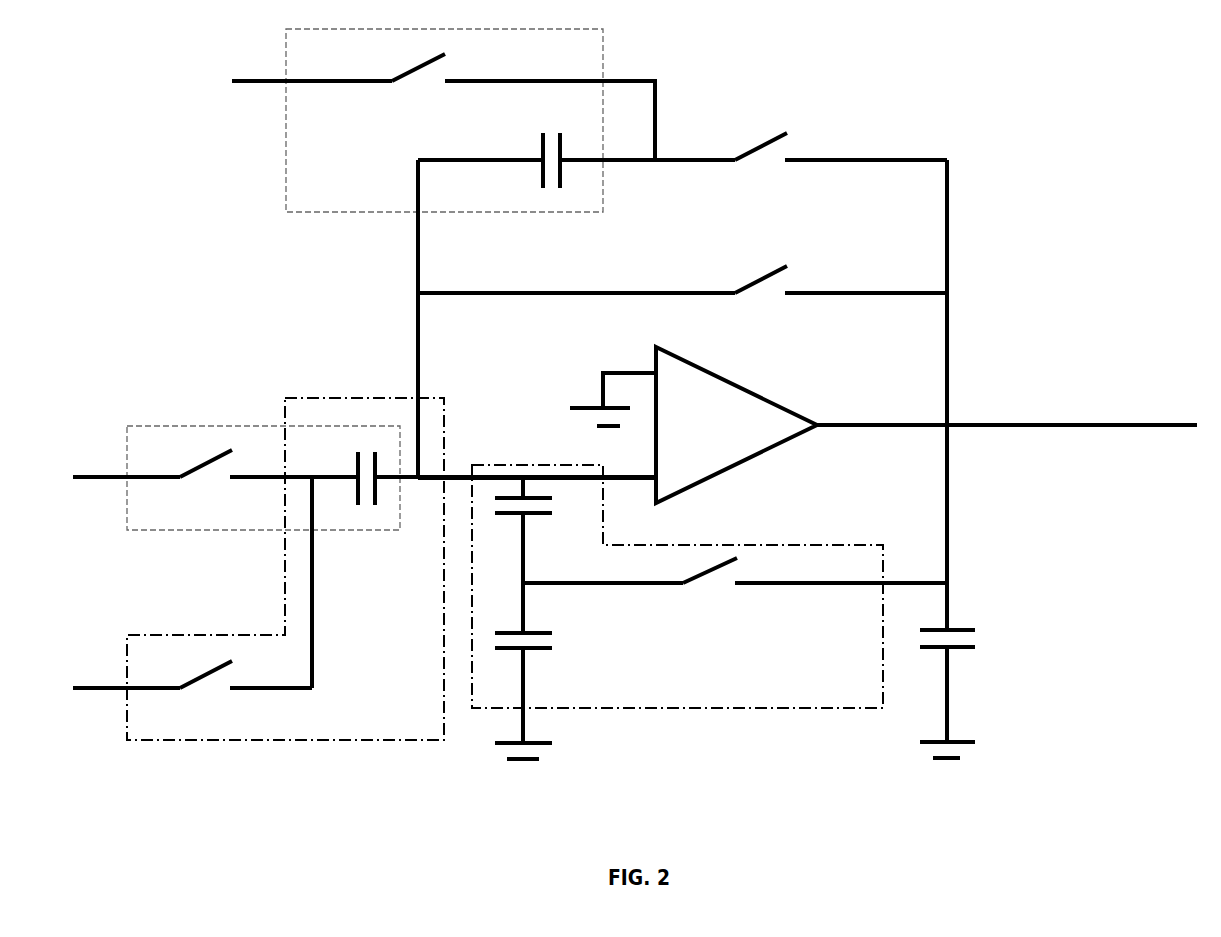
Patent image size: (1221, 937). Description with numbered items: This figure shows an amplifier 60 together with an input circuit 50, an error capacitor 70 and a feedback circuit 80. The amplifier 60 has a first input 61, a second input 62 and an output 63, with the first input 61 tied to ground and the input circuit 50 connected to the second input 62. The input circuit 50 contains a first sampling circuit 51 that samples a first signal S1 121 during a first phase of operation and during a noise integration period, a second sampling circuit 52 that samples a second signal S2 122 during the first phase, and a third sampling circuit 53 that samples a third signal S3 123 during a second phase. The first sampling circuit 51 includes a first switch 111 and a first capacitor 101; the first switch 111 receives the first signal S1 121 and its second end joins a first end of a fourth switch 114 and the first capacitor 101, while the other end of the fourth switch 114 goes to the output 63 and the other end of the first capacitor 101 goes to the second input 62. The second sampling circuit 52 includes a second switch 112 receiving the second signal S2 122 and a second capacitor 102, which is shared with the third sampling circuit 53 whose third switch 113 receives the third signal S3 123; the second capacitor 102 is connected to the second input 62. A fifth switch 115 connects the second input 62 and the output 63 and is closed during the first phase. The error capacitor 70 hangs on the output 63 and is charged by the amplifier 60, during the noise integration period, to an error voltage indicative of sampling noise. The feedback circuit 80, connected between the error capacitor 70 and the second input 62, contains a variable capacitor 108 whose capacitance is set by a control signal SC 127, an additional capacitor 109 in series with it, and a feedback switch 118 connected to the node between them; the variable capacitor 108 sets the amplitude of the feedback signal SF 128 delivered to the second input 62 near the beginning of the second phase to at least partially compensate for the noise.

The input circuit 50 is at (258, 180).
The first sampling circuit 51 is at (286, 54).
The second sampling circuit 52 is at (158, 432).
The third sampling circuit 53 is at (337, 398).
The amplifier 60 is at (736, 425).
The first input 61 is at (655, 362).
The second input 62 is at (655, 480).
The output 63 is at (817, 425).
The error capacitor 70 is at (946, 683).
The feedback circuit 80 is at (842, 545).
The first capacitor 101 is at (576, 159).
The second capacitor 102 is at (488, 477).
The variable capacitor 108 is at (531, 555).
The additional capacitor 109 is at (550, 648).
The first switch 111 is at (523, 107).
The second switch 112 is at (269, 473).
The third switch 113 is at (246, 684).
The fourth switch 114 is at (832, 145).
The fifth switch 115 is at (682, 274).
The feedback switch 118 is at (705, 575).
The first signal S1 121 is at (277, 90).
The second signal S2 122 is at (110, 462).
The third signal S3 123 is at (118, 674).
The control signal SC 127 is at (508, 520).
The feedback signal SF 128 is at (565, 477).